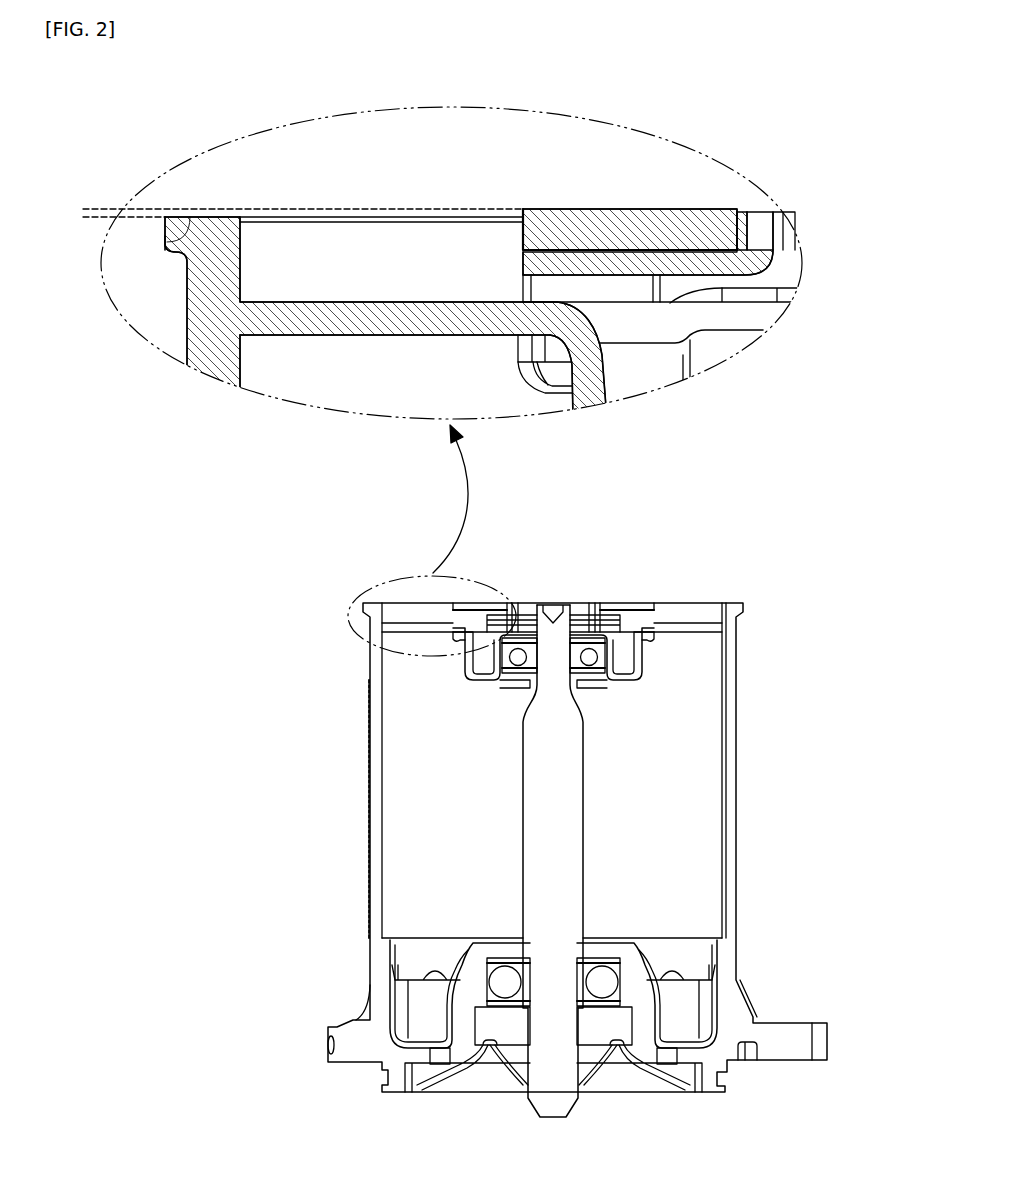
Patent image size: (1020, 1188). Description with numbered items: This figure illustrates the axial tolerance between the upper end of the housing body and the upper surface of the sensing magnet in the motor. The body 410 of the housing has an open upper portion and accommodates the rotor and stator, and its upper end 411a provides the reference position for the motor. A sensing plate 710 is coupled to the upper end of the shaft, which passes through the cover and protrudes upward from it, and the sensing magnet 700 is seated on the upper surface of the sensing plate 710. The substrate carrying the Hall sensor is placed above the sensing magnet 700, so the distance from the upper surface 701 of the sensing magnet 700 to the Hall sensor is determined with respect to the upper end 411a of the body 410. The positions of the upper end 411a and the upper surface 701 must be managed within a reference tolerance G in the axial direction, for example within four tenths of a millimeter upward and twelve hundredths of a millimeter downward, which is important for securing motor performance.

The body 410 is at (212, 313).
The upper end of the body 411a is at (165, 247).
The sensing magnet 700 is at (698, 218).
The upper surface of the sensing magnet 701 is at (662, 209).
The sensing plate 710 is at (705, 264).
The reference tolerance G is at (83, 189).